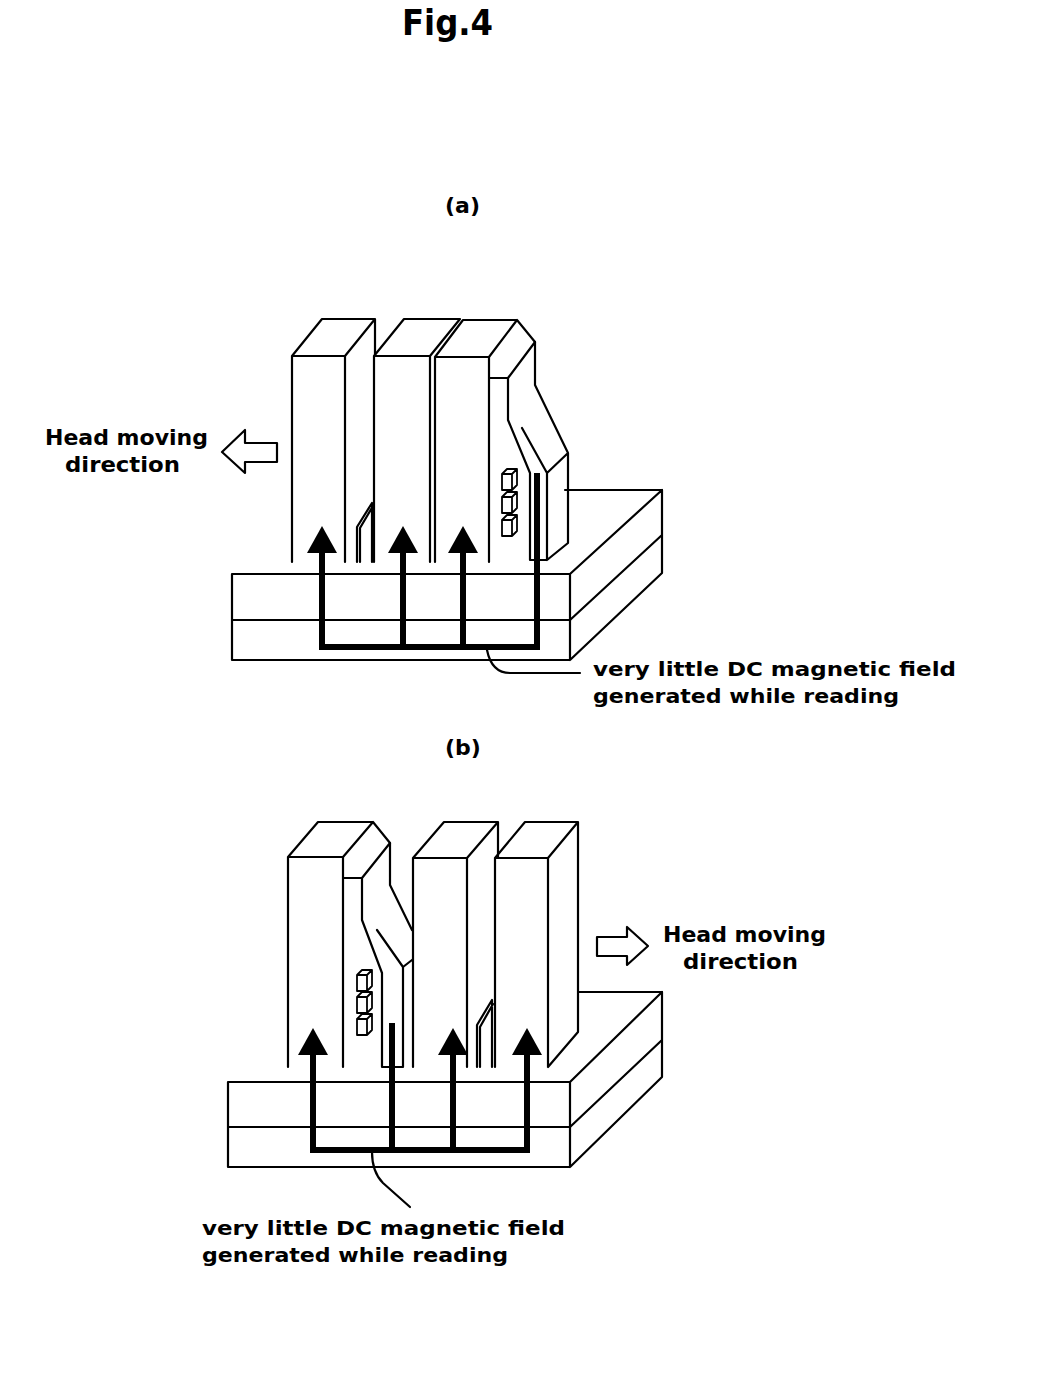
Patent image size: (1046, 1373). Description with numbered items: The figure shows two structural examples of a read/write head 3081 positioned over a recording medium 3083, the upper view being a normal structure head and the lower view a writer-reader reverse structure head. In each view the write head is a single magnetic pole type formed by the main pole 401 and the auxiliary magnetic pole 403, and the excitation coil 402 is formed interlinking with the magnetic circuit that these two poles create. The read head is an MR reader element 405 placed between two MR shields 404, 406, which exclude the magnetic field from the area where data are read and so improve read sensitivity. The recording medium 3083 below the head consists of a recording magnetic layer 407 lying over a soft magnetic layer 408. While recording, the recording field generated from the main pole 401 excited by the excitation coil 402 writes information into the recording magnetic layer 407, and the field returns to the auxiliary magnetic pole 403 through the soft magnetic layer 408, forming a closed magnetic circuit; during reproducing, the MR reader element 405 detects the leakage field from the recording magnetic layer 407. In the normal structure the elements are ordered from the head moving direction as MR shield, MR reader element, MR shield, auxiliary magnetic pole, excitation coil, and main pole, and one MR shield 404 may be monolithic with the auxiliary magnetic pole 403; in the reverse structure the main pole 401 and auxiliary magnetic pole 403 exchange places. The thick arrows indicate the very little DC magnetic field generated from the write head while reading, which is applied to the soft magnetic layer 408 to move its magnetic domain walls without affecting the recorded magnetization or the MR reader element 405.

The main pole 401 is at (558, 502).
The excitation coil 402 is at (507, 466).
The auxiliary magnetic pole 403 is at (483, 337).
The MR shield 404 is at (412, 330).
The MR reader element 405 is at (357, 527).
The MR shield 406 is at (320, 343).
The recording magnetic layer 407 is at (245, 600).
The soft magnetic layer 408 is at (245, 645).
The read/write head 3081 is at (585, 308).
The recording medium 3083 is at (676, 485).